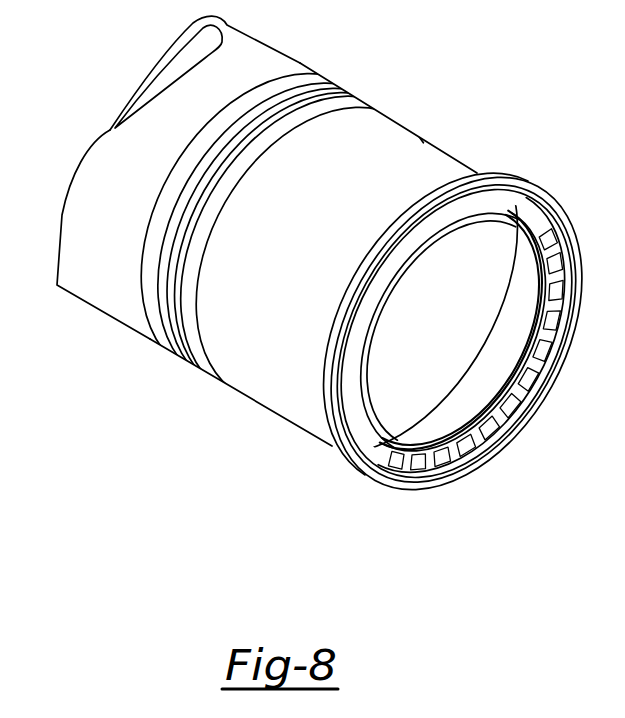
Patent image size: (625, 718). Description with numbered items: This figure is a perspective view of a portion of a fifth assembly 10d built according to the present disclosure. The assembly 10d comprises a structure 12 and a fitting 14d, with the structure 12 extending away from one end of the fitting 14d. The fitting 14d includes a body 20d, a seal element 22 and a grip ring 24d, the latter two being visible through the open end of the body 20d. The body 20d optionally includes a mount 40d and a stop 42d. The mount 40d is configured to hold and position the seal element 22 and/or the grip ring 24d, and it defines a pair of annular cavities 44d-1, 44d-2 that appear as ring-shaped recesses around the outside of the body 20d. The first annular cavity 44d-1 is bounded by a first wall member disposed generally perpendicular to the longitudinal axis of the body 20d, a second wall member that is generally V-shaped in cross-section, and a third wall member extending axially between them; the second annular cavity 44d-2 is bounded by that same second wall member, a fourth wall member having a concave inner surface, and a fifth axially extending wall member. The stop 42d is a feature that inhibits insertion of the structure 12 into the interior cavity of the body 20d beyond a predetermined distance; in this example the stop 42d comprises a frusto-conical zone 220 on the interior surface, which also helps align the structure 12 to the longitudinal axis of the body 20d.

The fifth assembly 10d is at (140, 383).
The structure 12 is at (115, 301).
The fitting 14d is at (497, 143).
The body 20d is at (428, 156).
The seal element 22 is at (543, 298).
The grip ring 24d is at (545, 337).
The mount 40d is at (367, 88).
The stop 42d is at (468, 382).
The annular cavity 44d-1 is at (160, 331).
The annular cavity 44d-2 is at (208, 378).
The frusto-conical zone 220 is at (407, 437).